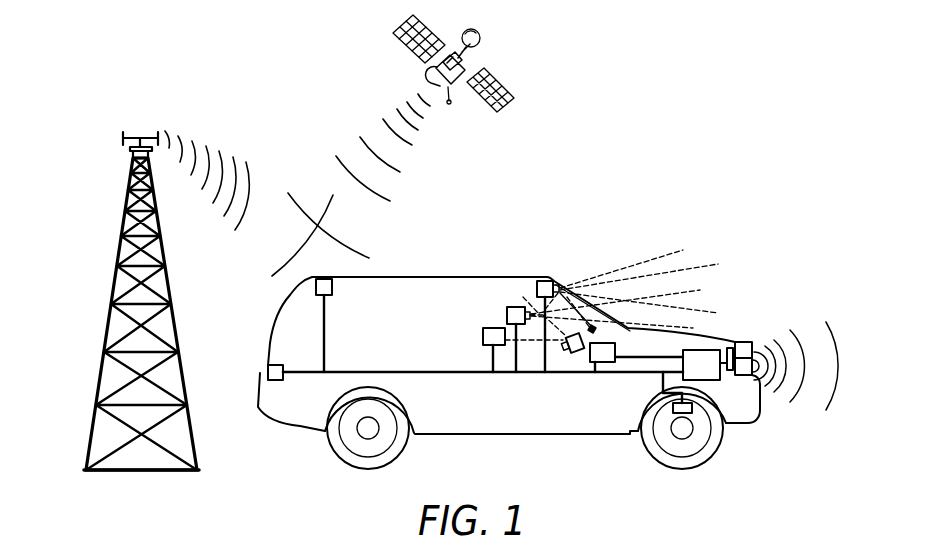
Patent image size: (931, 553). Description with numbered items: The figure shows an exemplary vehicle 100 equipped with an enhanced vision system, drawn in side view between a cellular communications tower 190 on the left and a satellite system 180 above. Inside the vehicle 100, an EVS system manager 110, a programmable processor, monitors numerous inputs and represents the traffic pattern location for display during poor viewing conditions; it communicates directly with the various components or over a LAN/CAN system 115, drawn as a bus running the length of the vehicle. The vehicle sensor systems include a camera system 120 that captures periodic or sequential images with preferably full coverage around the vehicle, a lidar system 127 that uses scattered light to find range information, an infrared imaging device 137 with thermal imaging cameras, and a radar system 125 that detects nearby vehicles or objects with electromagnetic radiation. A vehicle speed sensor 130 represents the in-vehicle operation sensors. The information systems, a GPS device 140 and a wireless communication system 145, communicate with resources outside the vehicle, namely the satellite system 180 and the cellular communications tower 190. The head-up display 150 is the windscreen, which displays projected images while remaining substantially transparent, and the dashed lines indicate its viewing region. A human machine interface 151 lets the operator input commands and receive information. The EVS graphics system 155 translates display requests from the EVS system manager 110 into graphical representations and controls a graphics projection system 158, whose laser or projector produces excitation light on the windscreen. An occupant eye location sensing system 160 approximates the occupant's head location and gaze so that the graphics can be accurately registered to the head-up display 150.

The vehicle 100 is at (475, 277).
The EVS system manager 110 is at (713, 374).
The LAN/CAN system 115 is at (355, 371).
The camera system 120 is at (548, 278).
The radar system 125 is at (753, 362).
The lidar system 127 is at (745, 343).
The vehicle speed sensor 130 is at (692, 410).
The infrared imaging device 137 is at (513, 306).
The GPS device 140 is at (268, 373).
The wireless communication system 145 is at (316, 287).
The head-up display 150 is at (648, 304).
The human machine interface 151 is at (484, 338).
The EVS graphics system 155 is at (603, 362).
The graphics projection system 158 is at (597, 328).
The occupant eye location sensing system 160 is at (571, 352).
The satellite system 180 is at (427, 73).
The cellular communications tower 190 is at (116, 268).